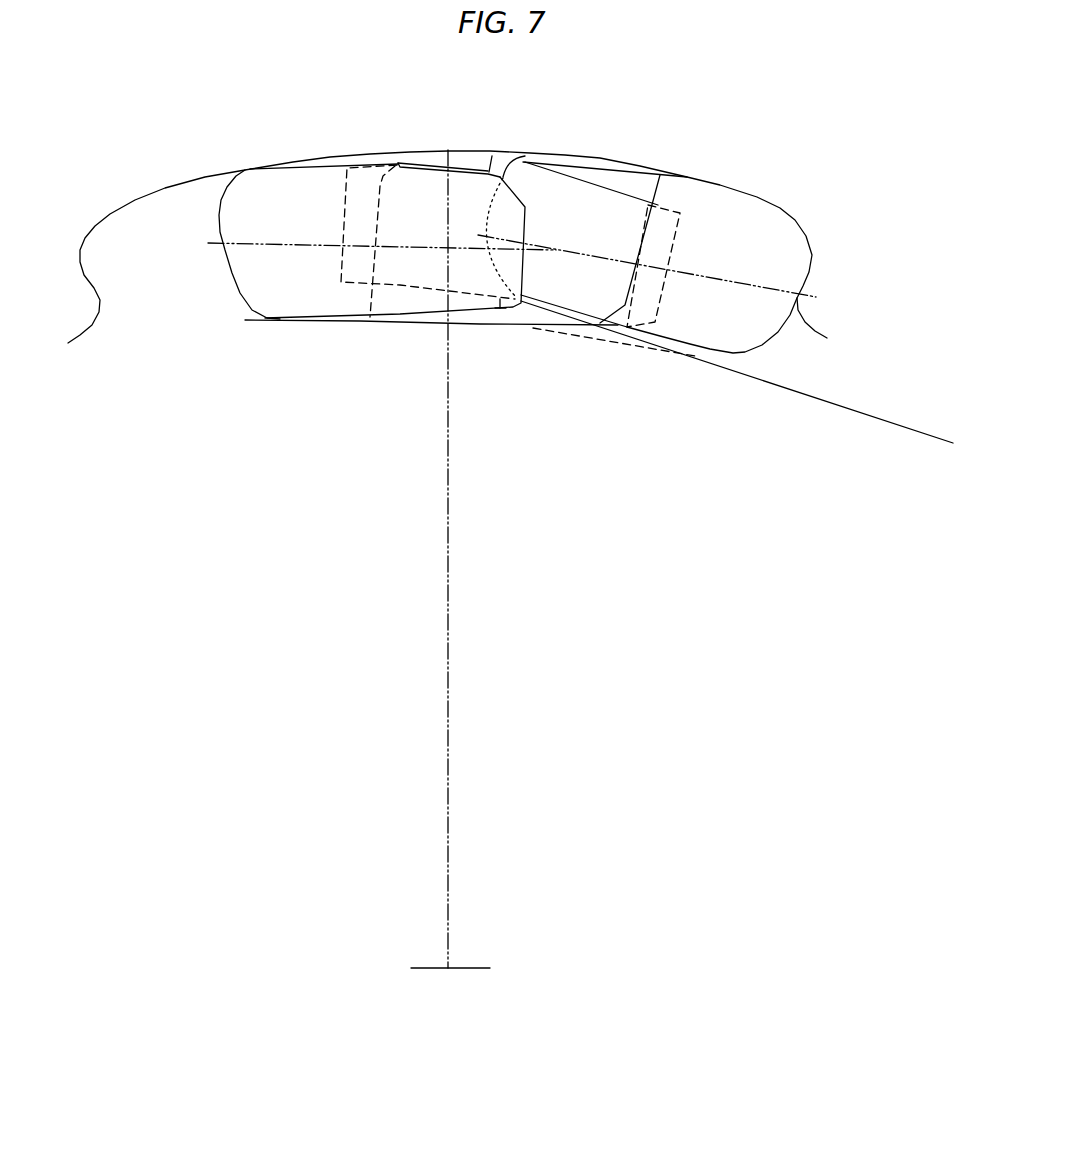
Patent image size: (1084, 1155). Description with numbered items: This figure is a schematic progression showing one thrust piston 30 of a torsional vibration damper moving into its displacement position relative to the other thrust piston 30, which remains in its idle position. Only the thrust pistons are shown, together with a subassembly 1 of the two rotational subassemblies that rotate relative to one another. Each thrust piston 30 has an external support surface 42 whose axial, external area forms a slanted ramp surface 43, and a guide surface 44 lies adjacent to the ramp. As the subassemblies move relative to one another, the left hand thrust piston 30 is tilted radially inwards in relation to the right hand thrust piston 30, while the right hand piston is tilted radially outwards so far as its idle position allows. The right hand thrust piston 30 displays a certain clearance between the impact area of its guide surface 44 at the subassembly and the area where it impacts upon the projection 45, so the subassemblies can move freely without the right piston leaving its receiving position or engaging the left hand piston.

The subassembly 1 is at (812, 395).
The thrust piston 30 is at (319, 168).
The external support surface 42 is at (430, 190).
The slanted ramp surface 43 is at (467, 168).
The guide surface 44 is at (492, 170).
The projection 45 is at (613, 337).